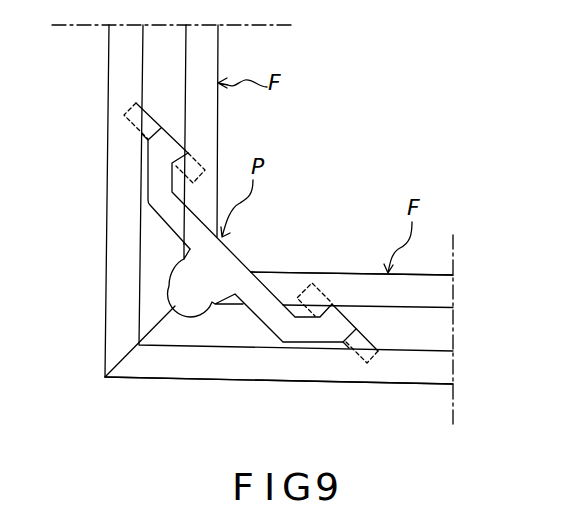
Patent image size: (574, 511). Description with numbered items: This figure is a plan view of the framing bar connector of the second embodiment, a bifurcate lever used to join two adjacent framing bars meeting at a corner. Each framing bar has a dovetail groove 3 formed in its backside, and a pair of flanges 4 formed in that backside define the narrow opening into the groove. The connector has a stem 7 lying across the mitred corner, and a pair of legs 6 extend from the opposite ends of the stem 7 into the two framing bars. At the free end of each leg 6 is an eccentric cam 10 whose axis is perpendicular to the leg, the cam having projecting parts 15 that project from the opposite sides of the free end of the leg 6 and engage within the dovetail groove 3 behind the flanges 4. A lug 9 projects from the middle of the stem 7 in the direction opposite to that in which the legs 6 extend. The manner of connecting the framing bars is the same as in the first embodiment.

The dovetail groove 3 is at (157, 58).
The flanges 4 is at (425, 302).
The legs 6 is at (157, 165).
The stem 7 is at (237, 267).
The lug 9 is at (193, 303).
The eccentric cams 10 is at (340, 317).
The projecting parts 15 is at (306, 288).